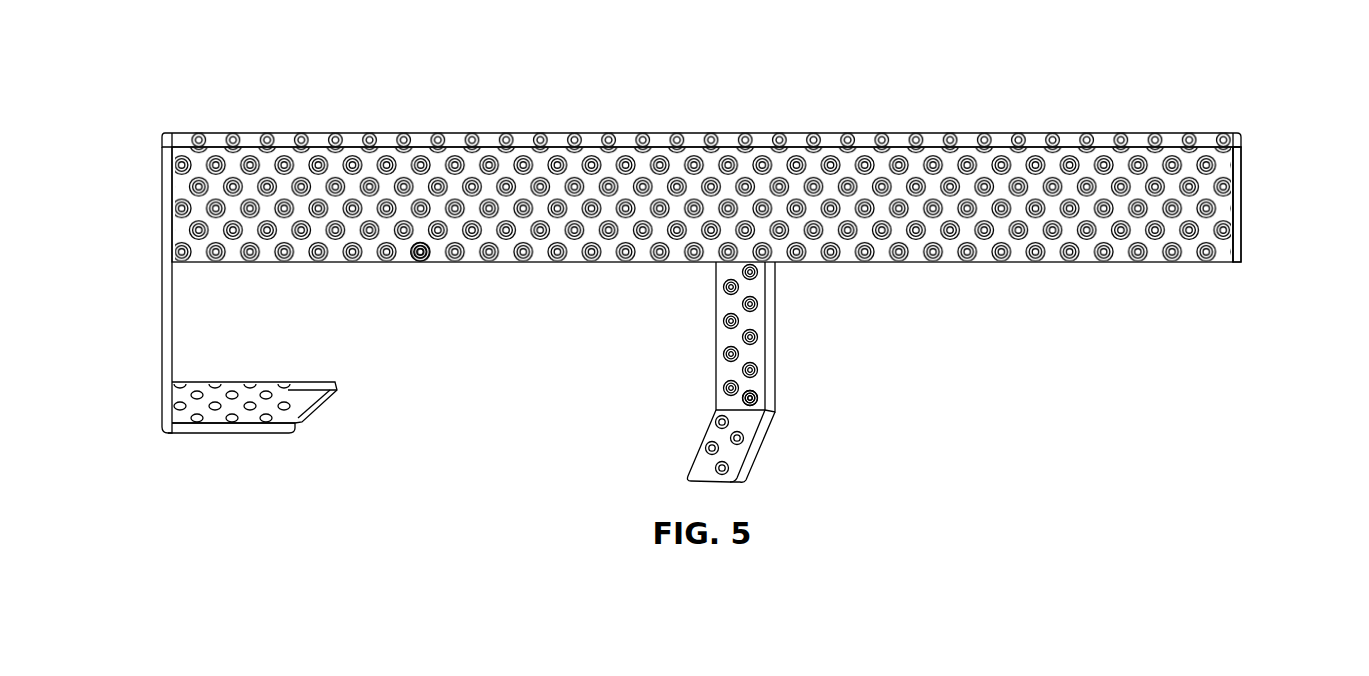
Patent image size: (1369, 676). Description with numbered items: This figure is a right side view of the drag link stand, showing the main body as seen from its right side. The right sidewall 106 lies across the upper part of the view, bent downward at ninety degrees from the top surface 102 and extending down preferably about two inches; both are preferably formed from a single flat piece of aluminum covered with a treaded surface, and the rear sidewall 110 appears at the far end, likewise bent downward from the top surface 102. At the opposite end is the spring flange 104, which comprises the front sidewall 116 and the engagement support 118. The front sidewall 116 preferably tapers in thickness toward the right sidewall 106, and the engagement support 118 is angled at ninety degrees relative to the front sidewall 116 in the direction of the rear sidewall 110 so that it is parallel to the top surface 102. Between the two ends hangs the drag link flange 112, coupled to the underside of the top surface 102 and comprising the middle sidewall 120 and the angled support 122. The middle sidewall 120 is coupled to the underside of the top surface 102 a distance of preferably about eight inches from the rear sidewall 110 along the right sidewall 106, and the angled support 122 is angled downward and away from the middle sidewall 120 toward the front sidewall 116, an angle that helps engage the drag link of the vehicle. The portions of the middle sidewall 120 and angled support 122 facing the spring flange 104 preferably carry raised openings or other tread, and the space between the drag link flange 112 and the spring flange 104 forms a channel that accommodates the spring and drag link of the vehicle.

The top surface 102 is at (588, 138).
The spring flange 104 is at (232, 387).
The right sidewall 106 is at (404, 253).
The rear sidewall 110 is at (1246, 212).
The drag link flange 112 is at (757, 393).
The front sidewall 116 is at (162, 312).
The engagement support 118 is at (230, 436).
The middle sidewall 120 is at (759, 320).
The angled support 122 is at (700, 465).